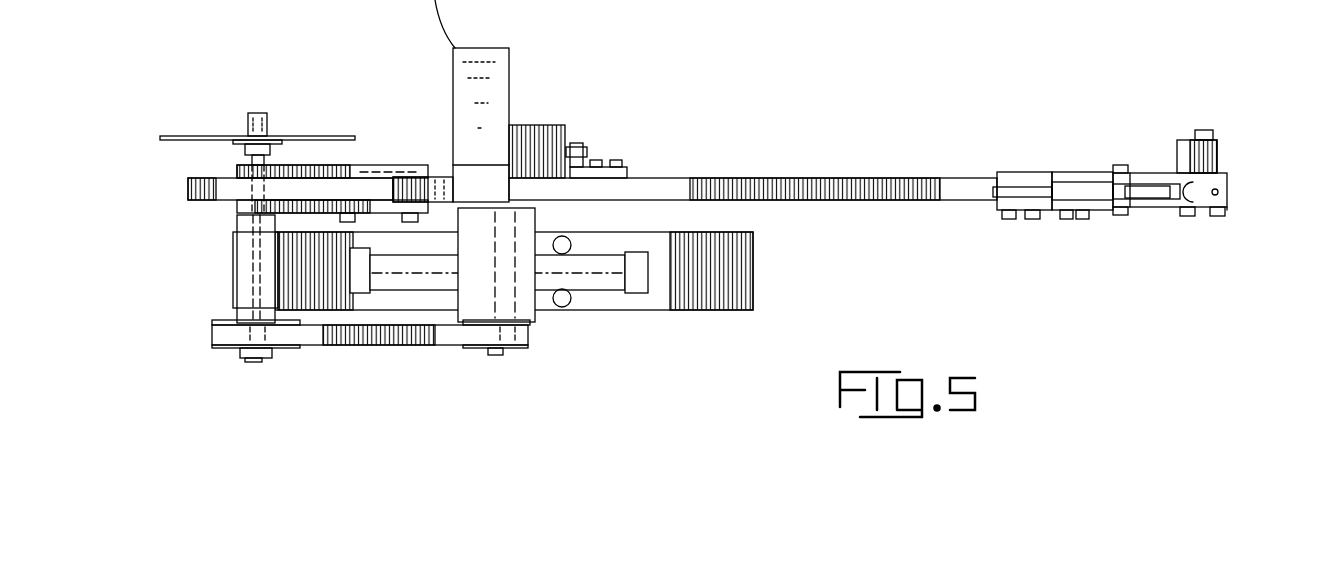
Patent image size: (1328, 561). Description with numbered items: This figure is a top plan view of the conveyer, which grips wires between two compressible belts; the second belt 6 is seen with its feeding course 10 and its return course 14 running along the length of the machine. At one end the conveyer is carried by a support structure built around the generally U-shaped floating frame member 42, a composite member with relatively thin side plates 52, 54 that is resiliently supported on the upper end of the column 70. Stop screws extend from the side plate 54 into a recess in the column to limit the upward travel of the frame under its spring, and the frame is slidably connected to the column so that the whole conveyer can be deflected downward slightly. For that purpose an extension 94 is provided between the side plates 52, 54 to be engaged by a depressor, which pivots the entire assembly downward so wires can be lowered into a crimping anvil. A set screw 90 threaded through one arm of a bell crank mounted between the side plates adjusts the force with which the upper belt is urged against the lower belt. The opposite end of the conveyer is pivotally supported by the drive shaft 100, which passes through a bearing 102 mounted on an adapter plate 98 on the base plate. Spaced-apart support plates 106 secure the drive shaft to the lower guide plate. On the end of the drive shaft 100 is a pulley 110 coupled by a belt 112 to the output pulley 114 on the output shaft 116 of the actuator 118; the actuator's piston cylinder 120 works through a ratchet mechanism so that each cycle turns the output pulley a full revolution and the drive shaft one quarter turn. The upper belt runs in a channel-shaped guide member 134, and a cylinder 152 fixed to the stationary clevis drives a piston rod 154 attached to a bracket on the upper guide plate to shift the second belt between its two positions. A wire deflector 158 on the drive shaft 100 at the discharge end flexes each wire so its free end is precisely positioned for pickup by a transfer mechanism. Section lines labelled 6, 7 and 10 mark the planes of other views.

The second belt 6 is at (135, 27).
The section line 7- 7 is at (145, 393).
The feeding course of the second belt 10 is at (470, 42).
The return course of the second belt 14 is at (810, 188).
The floating frame member 42 is at (1233, 213).
The side plate 52 is at (1202, 210).
The side plate 54 is at (1152, 173).
The column 70 is at (1177, 153).
The set screw 90 is at (1220, 193).
The extension 94 is at (1018, 192).
The adapter plate 98 is at (678, 303).
The drive shaft 100 is at (260, 112).
The bearing 102 is at (248, 282).
The support plates 106 is at (363, 165).
The pulley 110 is at (288, 347).
The belt 112 is at (363, 337).
The output pulley 114 is at (525, 347).
The output shaft 116 is at (495, 353).
The actuator 118 is at (533, 302).
The piston cylinder 120 is at (600, 263).
The channel-shaped guide member 134 is at (440, 178).
The cylinder 152 is at (535, 127).
The piston rod 154 is at (568, 140).
The wire deflector 158 is at (201, 136).